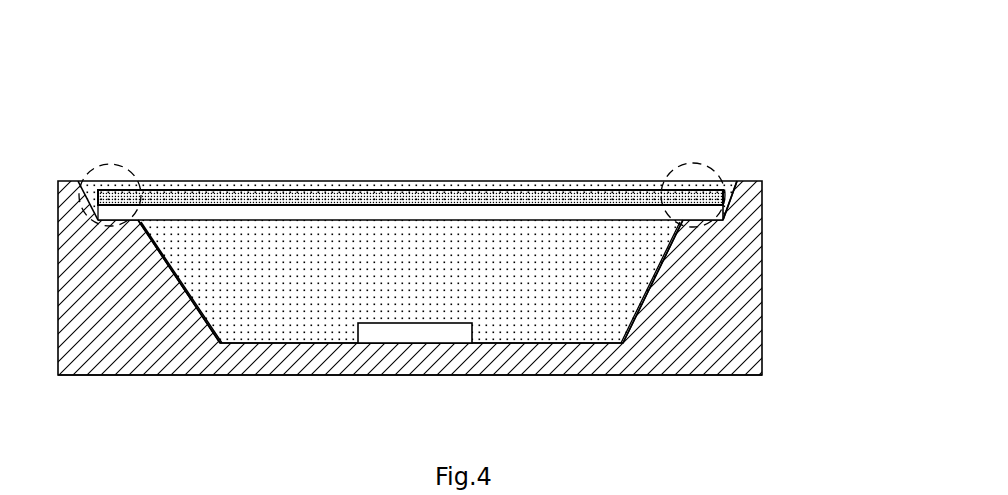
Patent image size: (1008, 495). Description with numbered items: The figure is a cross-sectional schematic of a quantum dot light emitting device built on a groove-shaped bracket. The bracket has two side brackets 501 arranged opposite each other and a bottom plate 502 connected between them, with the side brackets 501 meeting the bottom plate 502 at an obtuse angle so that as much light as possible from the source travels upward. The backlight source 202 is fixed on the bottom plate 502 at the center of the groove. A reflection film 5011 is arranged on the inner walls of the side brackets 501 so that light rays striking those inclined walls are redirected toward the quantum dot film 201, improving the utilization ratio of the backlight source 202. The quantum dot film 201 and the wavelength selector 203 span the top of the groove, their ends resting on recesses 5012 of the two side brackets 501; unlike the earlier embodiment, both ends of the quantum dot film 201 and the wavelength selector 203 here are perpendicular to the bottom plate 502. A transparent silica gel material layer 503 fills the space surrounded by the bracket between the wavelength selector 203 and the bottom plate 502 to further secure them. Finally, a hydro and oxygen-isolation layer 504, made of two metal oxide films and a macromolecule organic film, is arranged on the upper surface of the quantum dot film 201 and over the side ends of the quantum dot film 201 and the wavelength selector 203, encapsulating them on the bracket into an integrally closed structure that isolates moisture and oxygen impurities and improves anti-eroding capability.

The quantum dot film 201 is at (725, 218).
The backlight source 202 is at (450, 333).
The wavelength selector 203 is at (710, 215).
The side bracket 501 is at (742, 301).
The bottom plate 502 is at (302, 362).
The transparent silica gel material layer 503 is at (370, 233).
The hydro and oxygen-isolation layer 504 is at (295, 183).
The reflection film 5011 is at (220, 345).
The recess 5012 is at (140, 178).